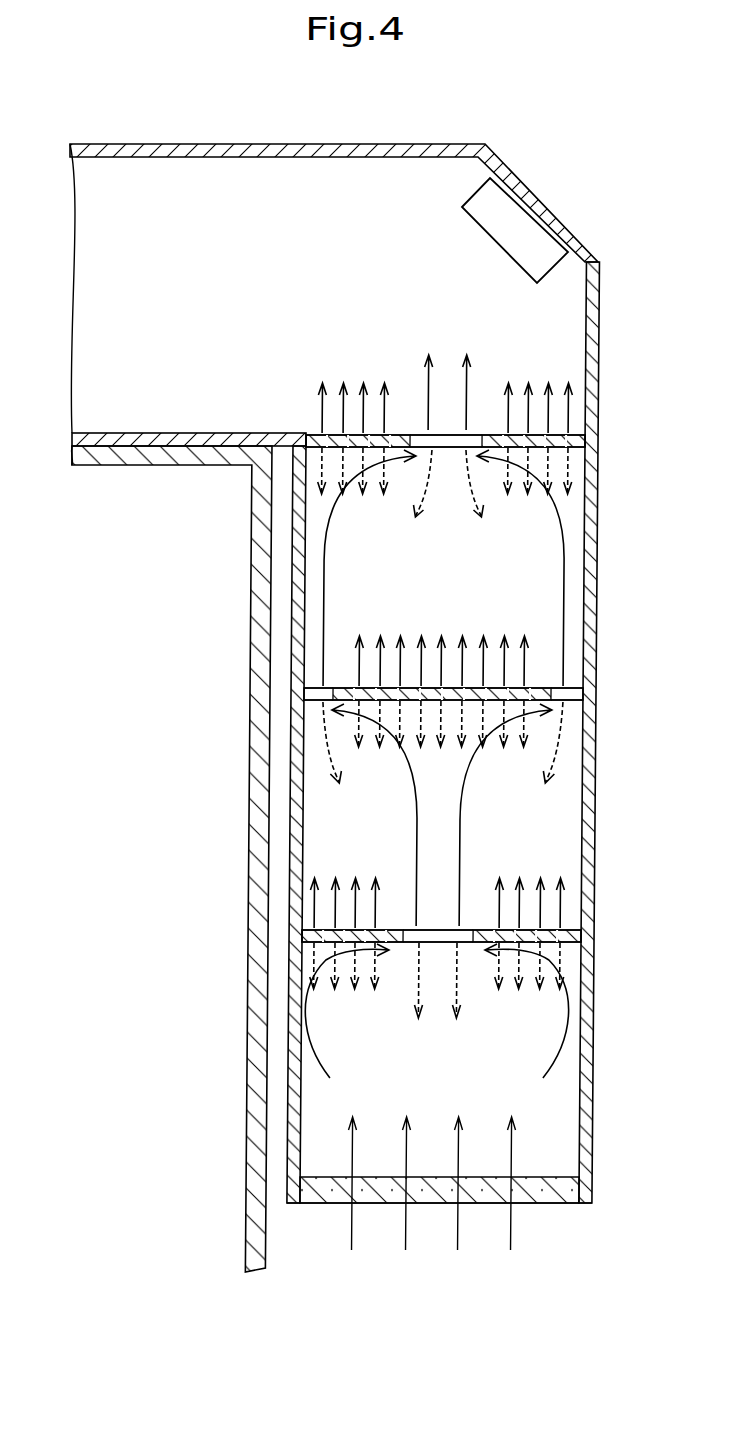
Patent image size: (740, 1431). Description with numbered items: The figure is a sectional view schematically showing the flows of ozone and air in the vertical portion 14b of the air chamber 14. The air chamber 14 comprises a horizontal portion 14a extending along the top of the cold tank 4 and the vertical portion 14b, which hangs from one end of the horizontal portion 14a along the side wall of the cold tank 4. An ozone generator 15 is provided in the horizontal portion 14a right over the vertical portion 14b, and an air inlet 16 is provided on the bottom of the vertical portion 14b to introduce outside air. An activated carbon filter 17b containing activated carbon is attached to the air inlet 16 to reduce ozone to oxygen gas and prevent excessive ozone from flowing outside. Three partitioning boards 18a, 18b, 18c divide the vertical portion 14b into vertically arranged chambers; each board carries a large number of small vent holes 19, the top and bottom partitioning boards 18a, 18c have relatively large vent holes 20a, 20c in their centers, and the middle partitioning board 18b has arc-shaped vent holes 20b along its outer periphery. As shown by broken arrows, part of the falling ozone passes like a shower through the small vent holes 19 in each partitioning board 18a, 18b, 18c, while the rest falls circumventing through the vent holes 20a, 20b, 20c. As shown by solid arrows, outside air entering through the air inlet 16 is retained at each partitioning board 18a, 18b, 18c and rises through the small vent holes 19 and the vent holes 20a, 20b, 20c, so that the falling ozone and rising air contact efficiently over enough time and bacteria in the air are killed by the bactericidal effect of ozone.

The cold tank 4 is at (150, 456).
The air chamber 14 is at (415, 132).
The horizontal portion 14a is at (235, 190).
The vertical portion 14b is at (580, 820).
The ozone generator 15 is at (522, 227).
The air inlet 16 is at (483, 1205).
The activated carbon filter 17b is at (545, 1195).
The top partitioning board 18a is at (583, 447).
The middle partitioning board 18b is at (585, 690).
The bottom partitioning board 18c is at (585, 930).
The small vent holes 19 is at (312, 435).
The vent hole 20a is at (418, 435).
The arc-shaped vent holes 20b is at (325, 690).
The vent hole 20c is at (414, 928).